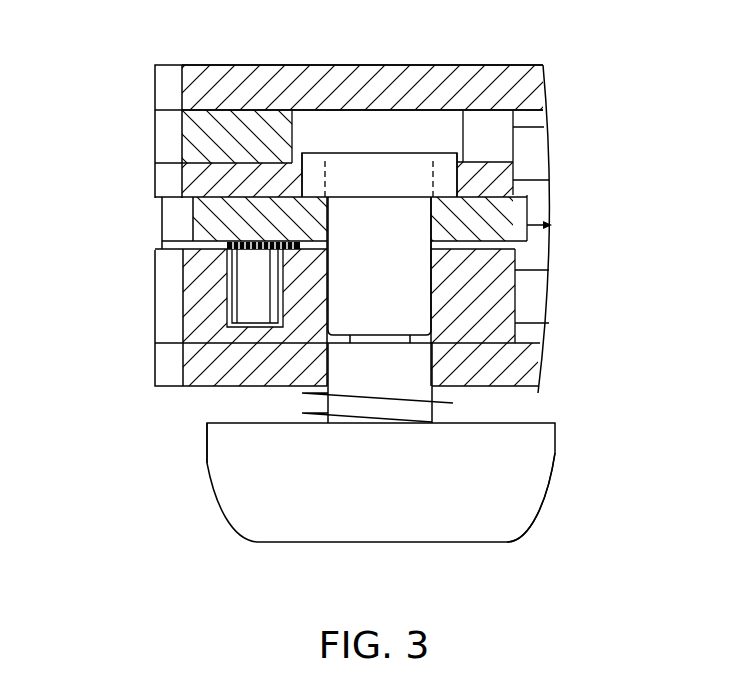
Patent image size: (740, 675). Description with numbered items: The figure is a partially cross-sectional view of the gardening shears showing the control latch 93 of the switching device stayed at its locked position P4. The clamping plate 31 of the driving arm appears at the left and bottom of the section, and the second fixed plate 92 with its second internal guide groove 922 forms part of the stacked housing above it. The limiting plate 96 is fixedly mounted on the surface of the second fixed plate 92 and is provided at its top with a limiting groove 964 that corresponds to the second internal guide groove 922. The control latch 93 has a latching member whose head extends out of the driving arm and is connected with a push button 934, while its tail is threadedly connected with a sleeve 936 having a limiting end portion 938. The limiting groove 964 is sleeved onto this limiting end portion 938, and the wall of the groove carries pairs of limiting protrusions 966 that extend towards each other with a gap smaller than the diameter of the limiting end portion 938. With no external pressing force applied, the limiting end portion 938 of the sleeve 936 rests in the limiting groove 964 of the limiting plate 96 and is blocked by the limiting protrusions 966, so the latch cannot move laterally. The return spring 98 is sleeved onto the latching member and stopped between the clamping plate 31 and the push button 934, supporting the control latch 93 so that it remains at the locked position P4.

The clamping plate 31 is at (210, 375).
The second fixed plate 92 is at (245, 130).
The second internal guide groove 922 is at (348, 113).
The control latch 93 is at (213, 534).
The push button 934 is at (518, 493).
The sleeve 936 is at (393, 259).
The limiting end portion 938 is at (392, 163).
The limiting plate 96 is at (207, 173).
The limiting groove 964 is at (487, 180).
The limiting protrusions 966 is at (323, 163).
The return spring 98 is at (453, 403).
The locked position P4 is at (176, 473).